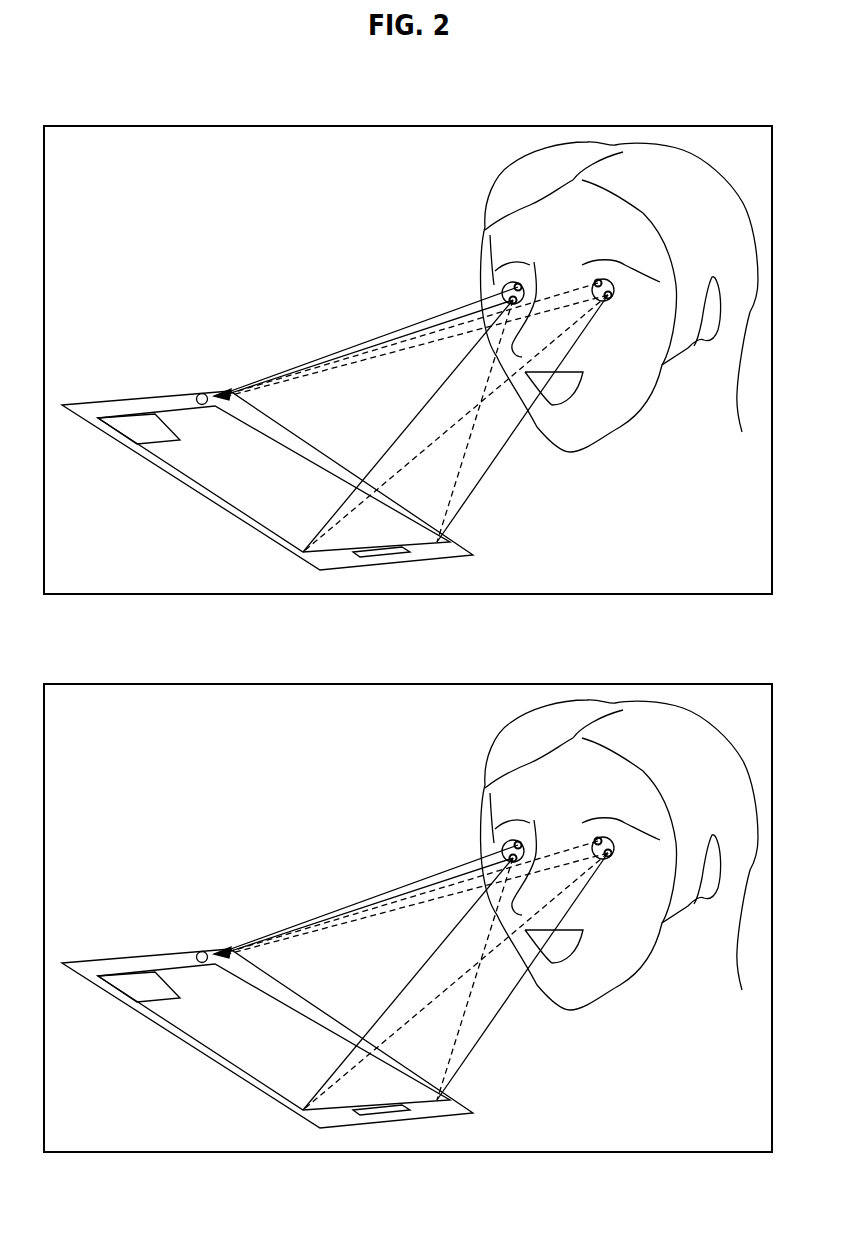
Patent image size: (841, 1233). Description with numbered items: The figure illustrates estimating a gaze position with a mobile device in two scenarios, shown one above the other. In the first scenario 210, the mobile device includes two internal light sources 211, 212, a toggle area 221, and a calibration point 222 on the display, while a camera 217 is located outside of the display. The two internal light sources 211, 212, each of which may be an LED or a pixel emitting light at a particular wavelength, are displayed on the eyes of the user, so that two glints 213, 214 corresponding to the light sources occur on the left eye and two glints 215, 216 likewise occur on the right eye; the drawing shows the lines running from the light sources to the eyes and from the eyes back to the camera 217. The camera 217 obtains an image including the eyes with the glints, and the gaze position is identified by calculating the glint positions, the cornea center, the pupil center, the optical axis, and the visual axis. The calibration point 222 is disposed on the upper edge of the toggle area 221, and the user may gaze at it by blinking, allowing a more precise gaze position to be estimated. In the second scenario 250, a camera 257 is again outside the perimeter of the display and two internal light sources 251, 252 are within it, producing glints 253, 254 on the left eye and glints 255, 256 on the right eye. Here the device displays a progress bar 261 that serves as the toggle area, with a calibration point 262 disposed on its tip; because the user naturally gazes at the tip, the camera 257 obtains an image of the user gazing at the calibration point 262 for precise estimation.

The first gaze estimation scenario 210 is at (409, 126).
The internal light source 211 is at (303, 553).
The internal light source 212 is at (451, 542).
The glint 213 is at (503, 284).
The glint 214 is at (534, 262).
The glint 215 is at (600, 281).
The glint 216 is at (613, 298).
The camera 217 is at (200, 396).
The toggle area 221 is at (140, 432).
The calibration point 222 is at (123, 418).
The second gaze estimation scenario 250 is at (408, 898).
The internal light source 251 is at (398, 991).
The internal light source 252 is at (522, 978).
The glint 253 is at (476, 817).
The glint 254 is at (540, 818).
The glint 255 is at (609, 815).
The glint 256 is at (621, 885).
The camera 257 is at (395, 902).
The progress bar 261 is at (261, 998).
The calibration point 262 is at (139, 944).